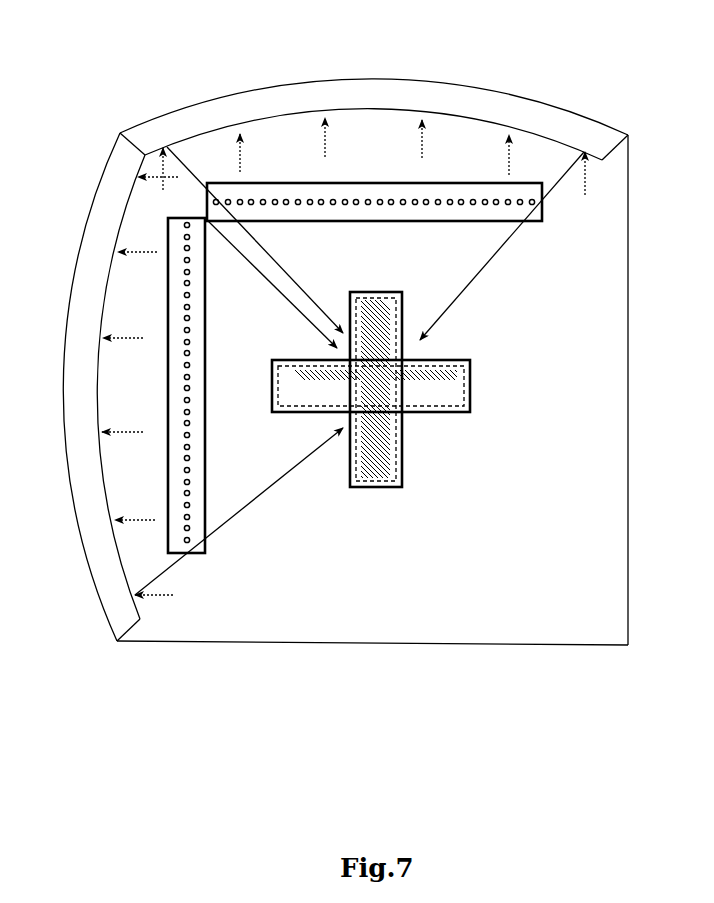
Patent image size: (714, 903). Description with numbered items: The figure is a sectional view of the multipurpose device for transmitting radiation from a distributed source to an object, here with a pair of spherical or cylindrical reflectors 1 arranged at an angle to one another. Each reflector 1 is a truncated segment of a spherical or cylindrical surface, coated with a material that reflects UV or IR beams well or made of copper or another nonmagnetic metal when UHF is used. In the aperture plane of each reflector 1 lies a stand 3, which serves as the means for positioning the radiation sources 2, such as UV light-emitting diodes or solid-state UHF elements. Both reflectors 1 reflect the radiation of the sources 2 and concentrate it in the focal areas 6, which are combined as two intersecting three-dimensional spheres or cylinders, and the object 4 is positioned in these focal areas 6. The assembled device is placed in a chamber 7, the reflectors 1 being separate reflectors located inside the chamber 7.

The reflector 1 is at (358, 92).
The radiation source 2 is at (465, 203).
The means for positioning a radiation source 3 is at (475, 183).
The object 4 is at (402, 318).
The focal areas 6 is at (313, 400).
The chamber 7 is at (240, 597).